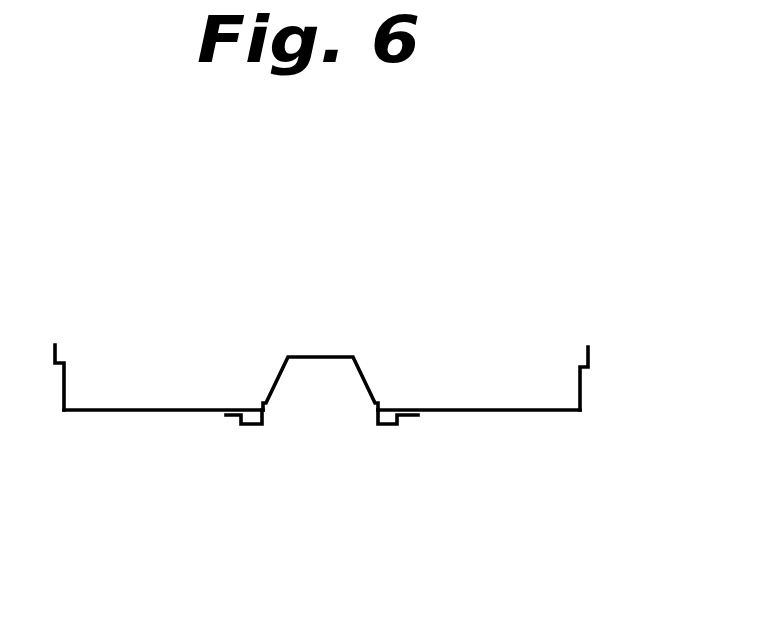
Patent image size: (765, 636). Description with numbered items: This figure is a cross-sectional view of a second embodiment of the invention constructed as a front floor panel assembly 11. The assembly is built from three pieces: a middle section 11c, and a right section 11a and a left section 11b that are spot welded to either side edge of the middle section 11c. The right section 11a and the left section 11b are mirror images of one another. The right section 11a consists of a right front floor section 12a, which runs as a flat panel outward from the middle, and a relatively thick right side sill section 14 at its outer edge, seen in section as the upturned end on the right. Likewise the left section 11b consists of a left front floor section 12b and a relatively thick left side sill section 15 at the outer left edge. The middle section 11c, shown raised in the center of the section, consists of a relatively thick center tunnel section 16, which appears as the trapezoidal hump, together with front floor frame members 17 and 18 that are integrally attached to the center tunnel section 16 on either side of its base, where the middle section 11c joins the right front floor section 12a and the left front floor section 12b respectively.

The front floor panel assembly 11 is at (368, 246).
The right section 11a is at (541, 265).
The left section 11b is at (232, 321).
The middle section 11c is at (382, 528).
The right front floor section 12a is at (472, 409).
The left front floor section 12b is at (198, 409).
The right side sill section 14 is at (578, 373).
The left side sill section 15 is at (68, 396).
The center tunnel section 16 is at (320, 358).
The front floor frame member 17 is at (387, 424).
The front floor frame member 18 is at (250, 425).